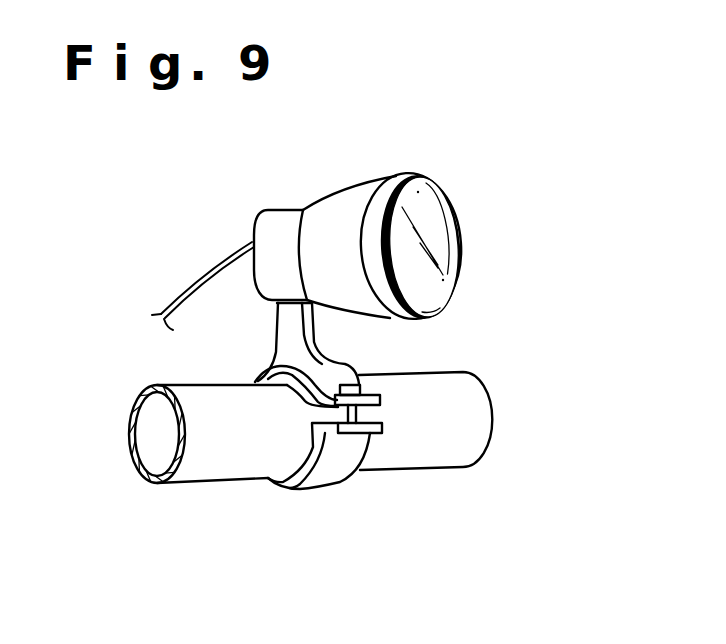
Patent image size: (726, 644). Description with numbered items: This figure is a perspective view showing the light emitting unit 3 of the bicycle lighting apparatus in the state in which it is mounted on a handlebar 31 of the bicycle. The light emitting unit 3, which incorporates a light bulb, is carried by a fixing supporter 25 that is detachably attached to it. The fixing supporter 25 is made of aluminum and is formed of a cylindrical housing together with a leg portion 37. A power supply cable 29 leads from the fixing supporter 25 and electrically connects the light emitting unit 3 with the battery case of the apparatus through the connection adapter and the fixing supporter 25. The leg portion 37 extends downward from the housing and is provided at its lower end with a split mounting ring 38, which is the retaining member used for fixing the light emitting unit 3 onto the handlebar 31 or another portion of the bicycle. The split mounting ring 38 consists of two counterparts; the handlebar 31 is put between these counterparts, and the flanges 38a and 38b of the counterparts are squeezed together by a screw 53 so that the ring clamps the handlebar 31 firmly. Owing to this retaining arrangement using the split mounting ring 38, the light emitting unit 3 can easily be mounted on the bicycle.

The light emitting unit 3 is at (370, 178).
The fixing supporter 25 is at (255, 220).
The power supply cable 29 is at (182, 296).
The handlebar 31 is at (457, 374).
The leg portion 37 is at (282, 324).
The split mounting ring 38 is at (268, 374).
The flange 38a is at (380, 400).
The flange 38b is at (382, 428).
The screw 53 is at (356, 385).